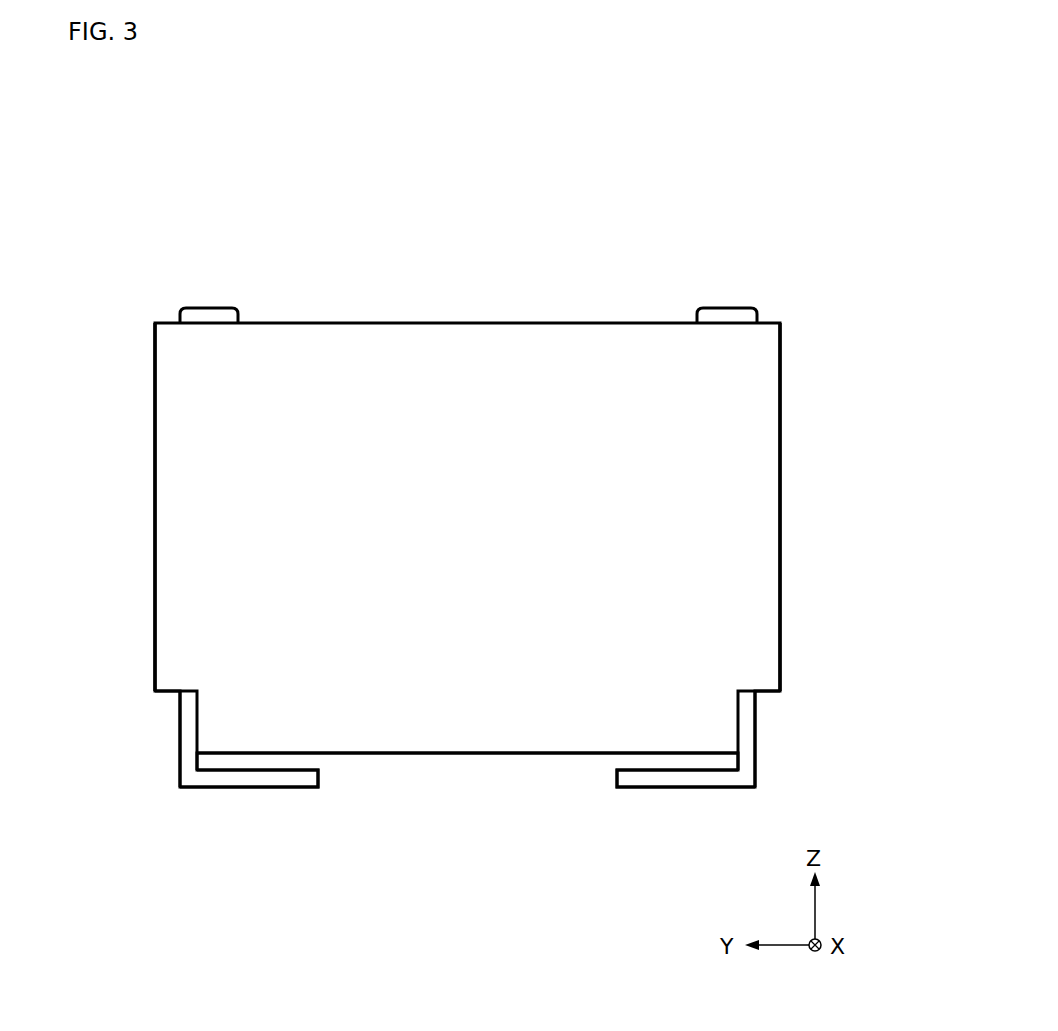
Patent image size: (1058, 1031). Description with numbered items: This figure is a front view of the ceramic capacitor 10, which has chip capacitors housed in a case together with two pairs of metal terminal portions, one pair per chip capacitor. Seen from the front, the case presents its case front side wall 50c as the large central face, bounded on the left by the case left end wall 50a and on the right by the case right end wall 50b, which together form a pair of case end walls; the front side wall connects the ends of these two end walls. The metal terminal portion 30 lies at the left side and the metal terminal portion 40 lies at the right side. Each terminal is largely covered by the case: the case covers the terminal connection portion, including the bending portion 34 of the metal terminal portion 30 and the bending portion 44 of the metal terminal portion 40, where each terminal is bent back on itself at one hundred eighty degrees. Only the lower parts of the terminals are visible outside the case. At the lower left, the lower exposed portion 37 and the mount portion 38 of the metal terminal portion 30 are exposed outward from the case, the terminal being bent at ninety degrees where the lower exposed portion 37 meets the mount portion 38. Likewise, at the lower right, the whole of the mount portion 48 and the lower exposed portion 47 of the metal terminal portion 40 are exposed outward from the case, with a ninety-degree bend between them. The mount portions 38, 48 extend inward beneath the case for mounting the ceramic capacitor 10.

The ceramic capacitor 10 is at (650, 231).
The metal terminal portion 30 is at (155, 313).
The bending portion 34 is at (212, 312).
The lower exposed portion 37 is at (188, 735).
The mount portion 38 is at (250, 778).
The metal terminal portion 40 is at (798, 305).
The bending portion 44 is at (725, 312).
The lower exposed portion 47 is at (748, 735).
The mount portion 48 is at (677, 778).
The case left end wall 50a is at (155, 462).
The case right end wall 50b is at (780, 478).
The case front side wall 50c is at (500, 551).